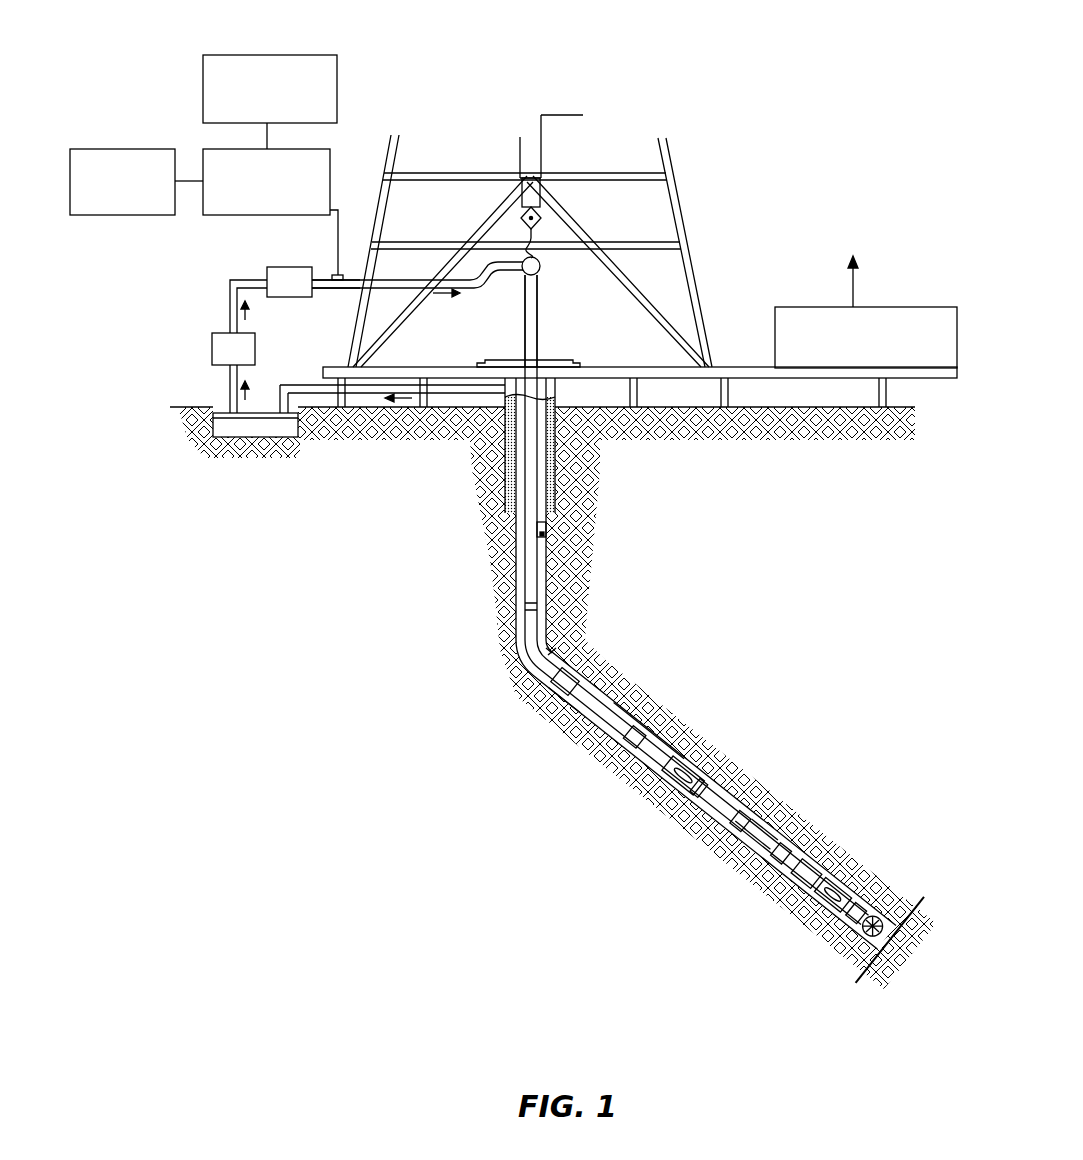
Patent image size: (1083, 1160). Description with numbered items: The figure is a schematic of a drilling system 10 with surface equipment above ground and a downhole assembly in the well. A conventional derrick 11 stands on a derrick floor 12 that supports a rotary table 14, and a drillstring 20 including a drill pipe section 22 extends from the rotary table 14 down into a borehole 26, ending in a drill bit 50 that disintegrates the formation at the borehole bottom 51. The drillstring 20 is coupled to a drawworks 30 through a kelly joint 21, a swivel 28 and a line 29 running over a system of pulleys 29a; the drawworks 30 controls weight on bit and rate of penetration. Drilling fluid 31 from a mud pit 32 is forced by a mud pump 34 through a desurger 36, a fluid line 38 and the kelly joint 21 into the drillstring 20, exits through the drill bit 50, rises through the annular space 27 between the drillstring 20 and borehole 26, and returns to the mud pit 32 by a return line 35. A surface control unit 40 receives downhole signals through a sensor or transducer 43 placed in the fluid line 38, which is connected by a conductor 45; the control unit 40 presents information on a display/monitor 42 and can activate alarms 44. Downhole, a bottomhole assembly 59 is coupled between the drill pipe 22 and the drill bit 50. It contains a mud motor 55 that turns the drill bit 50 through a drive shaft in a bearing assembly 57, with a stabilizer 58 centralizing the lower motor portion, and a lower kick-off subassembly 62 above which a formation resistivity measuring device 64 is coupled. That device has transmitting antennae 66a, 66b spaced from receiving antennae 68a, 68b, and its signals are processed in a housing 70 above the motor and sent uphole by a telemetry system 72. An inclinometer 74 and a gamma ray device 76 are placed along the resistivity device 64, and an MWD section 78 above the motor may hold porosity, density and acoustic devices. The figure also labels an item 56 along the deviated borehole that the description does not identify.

The drilling system 10 is at (728, 60).
The derrick 11 is at (690, 242).
The derrick floor 12 is at (712, 368).
The rotary table 14 is at (557, 358).
The drillstring 20 is at (550, 533).
The kelly joint 21 is at (538, 310).
The drill pipe section 22 is at (520, 595).
The borehole 26 is at (550, 653).
The annular space 27 is at (562, 672).
The swivel 28 is at (518, 277).
The line 29 is at (543, 162).
The system of pulleys 29a is at (540, 217).
The drawworks 30 is at (892, 307).
The drilling fluid 31 is at (222, 422).
The mud pit 32 is at (285, 437).
The mud pump 34 is at (212, 345).
The return line 35 is at (370, 393).
The desurger 36 is at (282, 267).
The fluid line 38 is at (333, 290).
The surface control unit 40 is at (330, 149).
The display/monitor 42 is at (290, 55).
The sensor 43 is at (335, 275).
The alarms 44 is at (107, 149).
The conductor 45 is at (340, 210).
The drill bit 50 is at (918, 906).
The borehole bottom 51 is at (853, 973).
The mud motor 55 is at (637, 717).
The lateral wellbore wall 56 is at (667, 742).
The bearing assembly 57 is at (780, 917).
The stabilizer 58 is at (860, 880).
The downhole subassembly 59 is at (698, 662).
The lower kick-off subassembly 62 is at (837, 867).
The formation resistivity measuring device 64 is at (755, 840).
The transmitting antenna 66a is at (680, 807).
The transmitting antenna 66b is at (770, 850).
The receiving antenna 68a is at (713, 830).
The receiving antenna 68b is at (742, 807).
The housing 70 is at (562, 700).
The telemetry system 72 is at (530, 647).
The inclinometer 74 is at (768, 818).
The gamma ray device 76 is at (810, 837).
The MWD section 78 is at (642, 678).